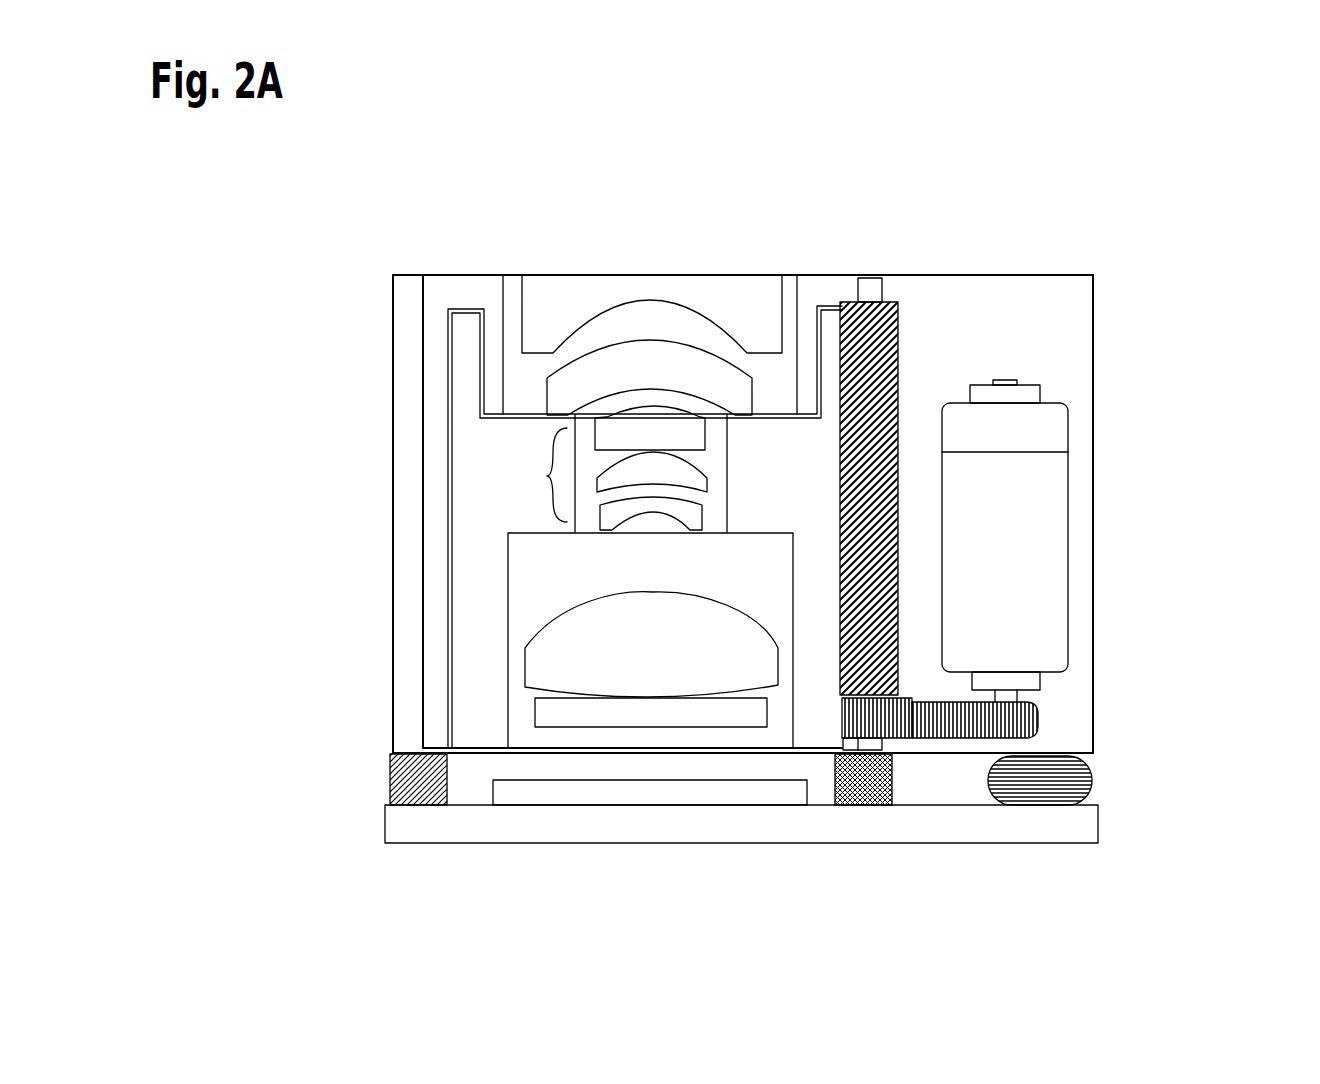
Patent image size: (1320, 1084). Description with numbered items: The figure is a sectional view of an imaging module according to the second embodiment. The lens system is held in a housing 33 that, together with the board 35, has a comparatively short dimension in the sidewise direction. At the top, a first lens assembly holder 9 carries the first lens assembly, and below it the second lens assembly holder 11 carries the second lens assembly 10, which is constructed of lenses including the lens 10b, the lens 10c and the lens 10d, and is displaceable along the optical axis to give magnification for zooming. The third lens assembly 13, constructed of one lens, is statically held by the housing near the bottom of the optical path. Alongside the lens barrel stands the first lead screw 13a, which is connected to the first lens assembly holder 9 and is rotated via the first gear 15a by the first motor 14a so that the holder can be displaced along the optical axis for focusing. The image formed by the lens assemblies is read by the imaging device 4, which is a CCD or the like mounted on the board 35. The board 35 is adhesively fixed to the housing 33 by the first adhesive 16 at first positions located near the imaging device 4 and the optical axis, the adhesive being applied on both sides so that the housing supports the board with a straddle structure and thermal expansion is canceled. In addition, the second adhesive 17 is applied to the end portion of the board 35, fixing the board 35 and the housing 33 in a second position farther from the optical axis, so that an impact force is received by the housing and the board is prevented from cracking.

The first lens assembly holder 9 is at (448, 298).
The housing 33 is at (1060, 358).
The second lens assembly holder 11 is at (468, 537).
The second lens assembly 10 is at (553, 477).
The lens 10b is at (685, 480).
The lens 10c is at (685, 517).
The lens 10d is at (685, 432).
The third lens assembly 13 is at (547, 668).
The first lead screw 13a is at (902, 310).
The first gear 15a is at (952, 738).
The first motor 14a is at (1033, 530).
The first adhesive 16 is at (390, 790).
The second adhesive 17 is at (1070, 780).
The imaging device 4 is at (753, 793).
The board 35 is at (693, 835).